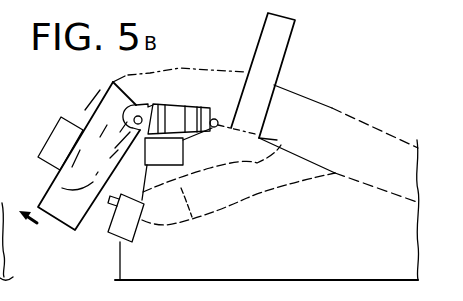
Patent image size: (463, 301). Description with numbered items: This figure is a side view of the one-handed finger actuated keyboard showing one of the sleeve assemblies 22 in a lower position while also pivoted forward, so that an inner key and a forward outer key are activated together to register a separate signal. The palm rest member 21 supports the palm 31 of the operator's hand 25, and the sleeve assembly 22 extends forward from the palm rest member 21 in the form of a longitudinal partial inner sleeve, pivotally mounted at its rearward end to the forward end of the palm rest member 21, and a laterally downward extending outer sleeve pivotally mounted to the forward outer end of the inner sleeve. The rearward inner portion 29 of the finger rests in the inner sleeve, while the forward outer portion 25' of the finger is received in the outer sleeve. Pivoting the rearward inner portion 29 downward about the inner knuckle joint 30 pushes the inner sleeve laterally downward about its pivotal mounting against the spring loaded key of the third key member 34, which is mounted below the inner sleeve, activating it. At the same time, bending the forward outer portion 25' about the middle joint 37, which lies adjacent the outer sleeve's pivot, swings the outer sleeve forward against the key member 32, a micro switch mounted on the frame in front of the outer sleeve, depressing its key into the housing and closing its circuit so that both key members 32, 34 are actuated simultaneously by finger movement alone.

The palm rest member 21 is at (410, 244).
The finger actuated sleeve assembly 22 is at (37, 182).
The operator's hand 25 is at (273, 146).
The forward outer portion of finger 25' is at (95, 156).
The rearward inner portion of finger 29 is at (172, 76).
The inner knuckle joint 30 is at (247, 73).
The palm 31 is at (277, 127).
The key member 32 is at (47, 122).
The third key member 34 is at (183, 152).
The middle joint 37 is at (118, 77).